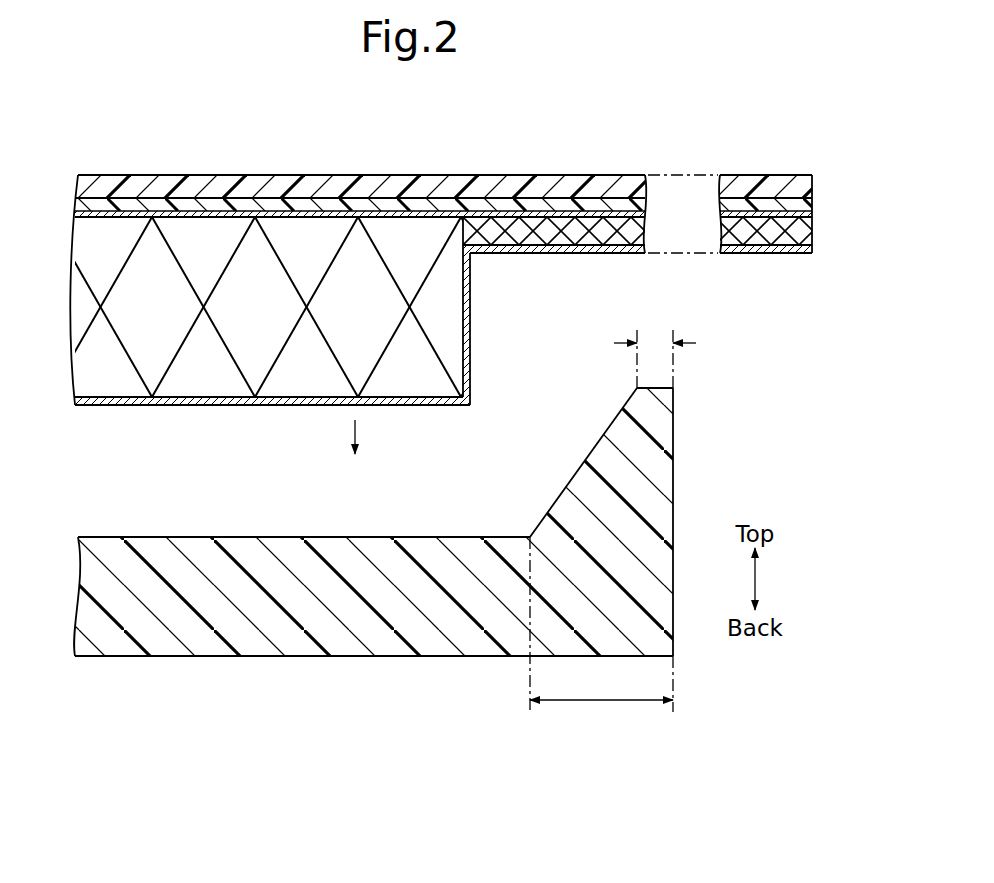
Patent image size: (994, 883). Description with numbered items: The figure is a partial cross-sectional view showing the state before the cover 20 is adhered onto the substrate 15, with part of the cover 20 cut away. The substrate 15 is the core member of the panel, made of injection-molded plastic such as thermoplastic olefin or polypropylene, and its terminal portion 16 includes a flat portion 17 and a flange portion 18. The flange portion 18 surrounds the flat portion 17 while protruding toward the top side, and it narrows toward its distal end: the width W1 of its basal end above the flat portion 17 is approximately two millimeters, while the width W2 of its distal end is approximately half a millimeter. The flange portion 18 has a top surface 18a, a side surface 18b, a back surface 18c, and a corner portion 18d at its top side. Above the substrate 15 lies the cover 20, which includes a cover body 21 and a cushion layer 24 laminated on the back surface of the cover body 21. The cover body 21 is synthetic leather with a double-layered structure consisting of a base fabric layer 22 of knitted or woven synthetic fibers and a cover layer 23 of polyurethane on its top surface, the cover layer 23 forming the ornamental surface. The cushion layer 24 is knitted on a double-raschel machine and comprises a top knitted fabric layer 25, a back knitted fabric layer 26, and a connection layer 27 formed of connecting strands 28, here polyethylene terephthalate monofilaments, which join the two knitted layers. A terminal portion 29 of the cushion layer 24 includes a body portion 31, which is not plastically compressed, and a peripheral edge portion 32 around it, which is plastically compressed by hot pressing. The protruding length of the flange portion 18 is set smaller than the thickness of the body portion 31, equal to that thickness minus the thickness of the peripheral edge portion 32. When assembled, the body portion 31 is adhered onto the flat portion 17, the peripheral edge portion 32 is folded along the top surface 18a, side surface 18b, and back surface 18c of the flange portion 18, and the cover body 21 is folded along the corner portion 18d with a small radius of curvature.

The substrate 15 is at (145, 524).
The terminal portion 16 is at (411, 518).
The flat portion 17 is at (472, 547).
The flange portion 18 is at (613, 518).
The top surface 18a is at (637, 390).
The side surface 18b is at (673, 518).
The back surface 18c is at (617, 661).
The corner portion 18d is at (673, 388).
The cover 20 is at (430, 289).
The cover body 21 is at (443, 149).
The base fabric layer 22 is at (705, 132).
The cover layer 23 is at (742, 184).
The cushion layer 24 is at (443, 308).
The top knitted fabric layer 25 is at (428, 217).
The back knitted fabric layer 26 is at (500, 383).
The connection layer 27 is at (440, 344).
The connecting strands 28 is at (227, 347).
The terminal portion 29 is at (511, 353).
The body portion 31 is at (233, 406).
The peripheral edge portion 32 is at (598, 254).
The width of basal end W1 is at (600, 700).
The width of distal end W2 is at (655, 343).